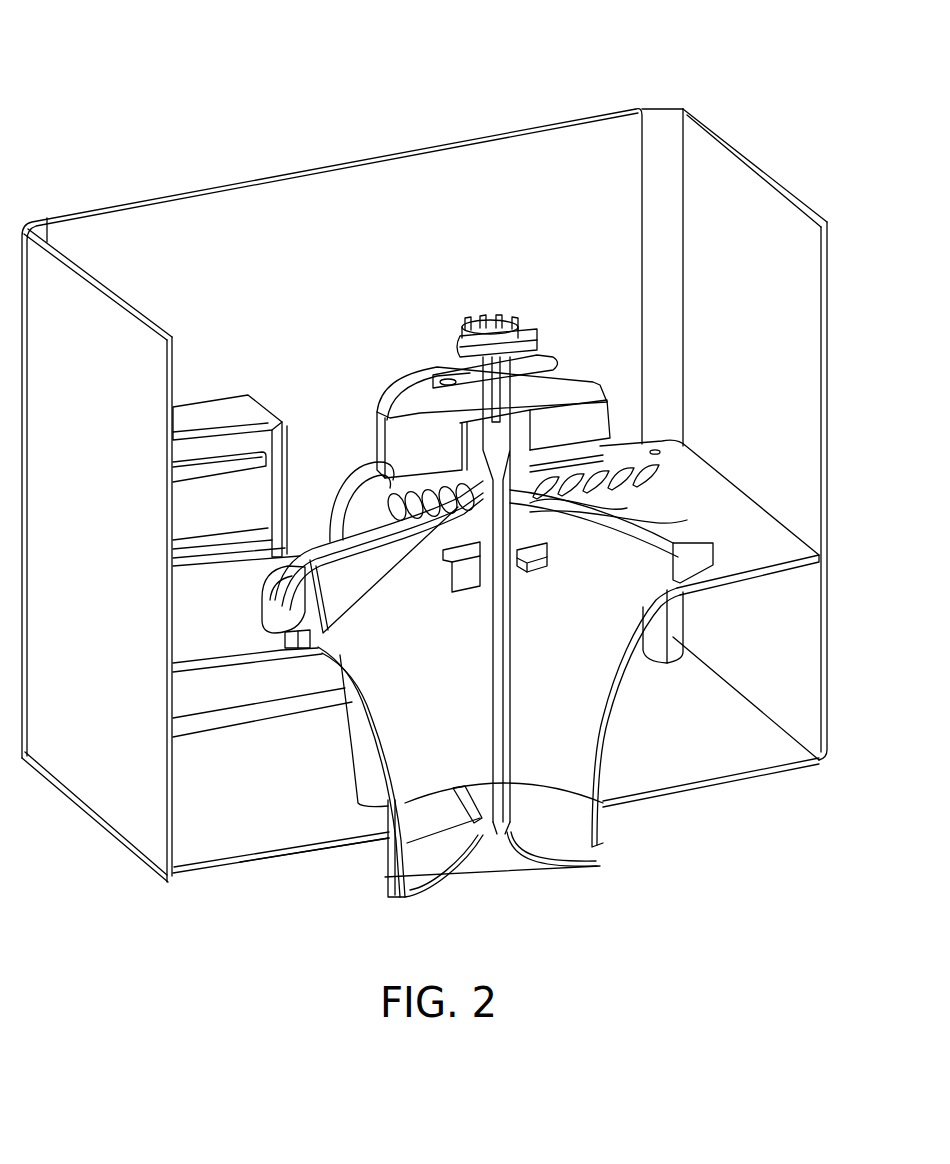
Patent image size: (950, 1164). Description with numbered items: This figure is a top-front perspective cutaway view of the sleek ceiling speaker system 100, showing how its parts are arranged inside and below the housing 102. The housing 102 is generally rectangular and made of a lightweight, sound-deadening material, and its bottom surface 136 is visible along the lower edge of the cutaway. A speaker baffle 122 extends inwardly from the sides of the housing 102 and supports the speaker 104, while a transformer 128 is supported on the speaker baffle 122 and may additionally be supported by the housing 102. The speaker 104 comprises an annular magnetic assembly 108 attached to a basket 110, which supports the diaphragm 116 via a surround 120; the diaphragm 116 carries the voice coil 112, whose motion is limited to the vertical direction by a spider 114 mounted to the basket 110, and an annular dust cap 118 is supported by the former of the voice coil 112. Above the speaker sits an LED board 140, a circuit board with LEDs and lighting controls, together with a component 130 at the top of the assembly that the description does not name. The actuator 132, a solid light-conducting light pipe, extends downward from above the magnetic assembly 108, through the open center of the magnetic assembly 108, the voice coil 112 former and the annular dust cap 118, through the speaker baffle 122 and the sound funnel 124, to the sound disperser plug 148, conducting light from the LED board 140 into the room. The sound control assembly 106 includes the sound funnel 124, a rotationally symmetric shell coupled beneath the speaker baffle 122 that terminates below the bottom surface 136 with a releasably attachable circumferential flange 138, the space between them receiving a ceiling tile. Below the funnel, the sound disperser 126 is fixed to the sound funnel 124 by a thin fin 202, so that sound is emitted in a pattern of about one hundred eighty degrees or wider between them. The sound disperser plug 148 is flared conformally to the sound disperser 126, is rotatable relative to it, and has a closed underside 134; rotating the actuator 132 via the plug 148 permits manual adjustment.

The sleek ceiling speaker system 100 is at (200, 57).
The housing 102 is at (66, 206).
The speaker 104 is at (309, 328).
The sound control assembly 106 is at (640, 759).
The annular magnetic assembly 108 is at (356, 379).
The basket 110 is at (608, 488).
The voice coil 112 is at (687, 520).
The spider 114 is at (627, 508).
The diaphragm 116 is at (367, 600).
The annular dust cap 118 is at (527, 565).
The surround 120 is at (317, 636).
The speaker baffle 122 is at (188, 672).
The sound funnel 124 is at (603, 720).
The sound disperser 126 is at (590, 866).
The transformer 128 is at (247, 403).
The cap 130 is at (465, 320).
The actuator 132 is at (490, 612).
The underside of sound disperser plug 134 is at (522, 887).
The bottom surface of housing 136 is at (232, 877).
The circumferential flange 138 is at (380, 874).
The LED board 140 is at (552, 356).
The sound disperser plug 148 is at (465, 900).
The fin 202 is at (468, 800).